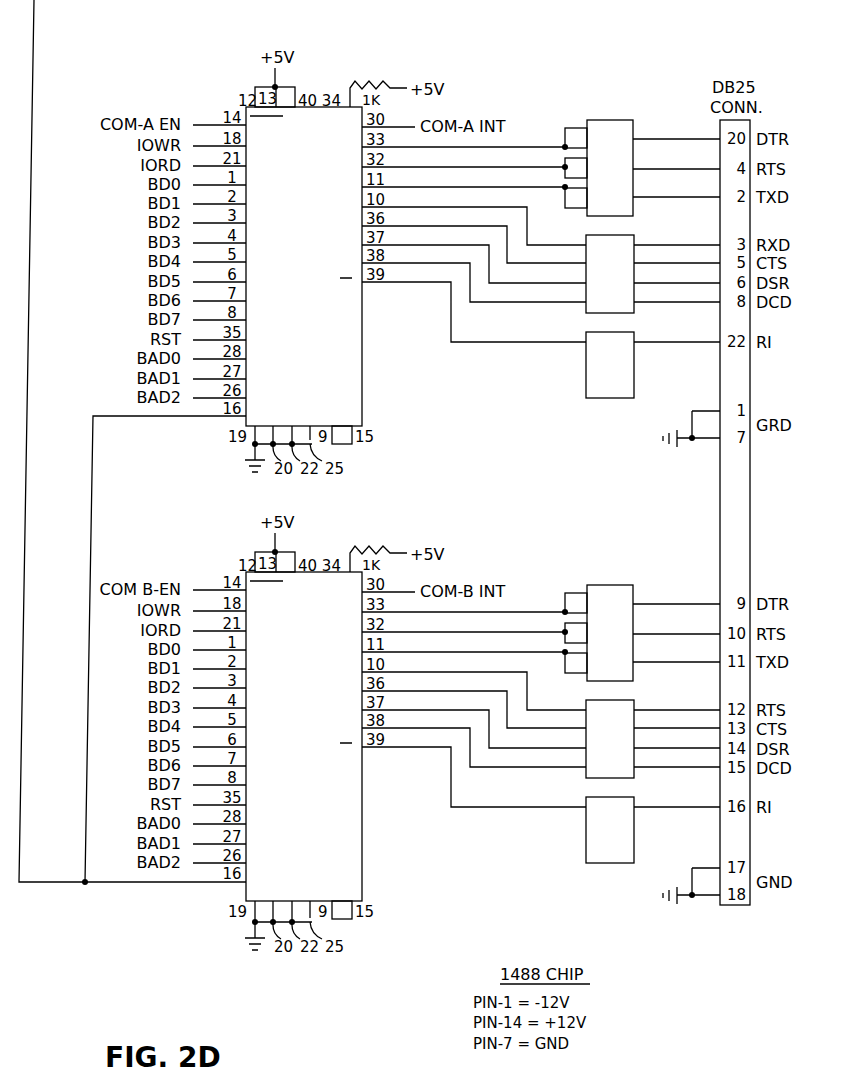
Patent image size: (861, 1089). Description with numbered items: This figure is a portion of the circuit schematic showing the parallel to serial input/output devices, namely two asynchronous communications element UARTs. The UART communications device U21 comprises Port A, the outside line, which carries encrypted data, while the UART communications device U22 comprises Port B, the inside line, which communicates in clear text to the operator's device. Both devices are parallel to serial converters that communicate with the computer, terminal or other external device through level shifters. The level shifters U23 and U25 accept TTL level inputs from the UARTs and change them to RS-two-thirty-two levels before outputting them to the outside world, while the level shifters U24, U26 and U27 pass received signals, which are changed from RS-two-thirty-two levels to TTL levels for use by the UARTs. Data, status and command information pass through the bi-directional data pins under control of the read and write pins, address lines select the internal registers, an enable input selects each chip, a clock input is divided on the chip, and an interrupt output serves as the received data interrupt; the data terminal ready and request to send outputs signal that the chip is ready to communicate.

The 8250 UART communications device U21 is at (304, 266).
The 8250 UART communications device U22 is at (304, 736).
The 1488 level shifter U23 is at (602, 163).
The level shifter U24 is at (609, 270).
The 1488 level shifter U25 is at (602, 628).
The level shifter U26 is at (609, 735).
The 1489 line receiver U27 is at (609, 593).